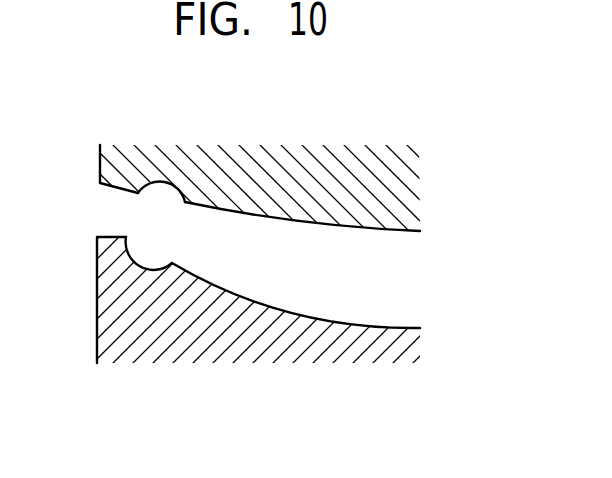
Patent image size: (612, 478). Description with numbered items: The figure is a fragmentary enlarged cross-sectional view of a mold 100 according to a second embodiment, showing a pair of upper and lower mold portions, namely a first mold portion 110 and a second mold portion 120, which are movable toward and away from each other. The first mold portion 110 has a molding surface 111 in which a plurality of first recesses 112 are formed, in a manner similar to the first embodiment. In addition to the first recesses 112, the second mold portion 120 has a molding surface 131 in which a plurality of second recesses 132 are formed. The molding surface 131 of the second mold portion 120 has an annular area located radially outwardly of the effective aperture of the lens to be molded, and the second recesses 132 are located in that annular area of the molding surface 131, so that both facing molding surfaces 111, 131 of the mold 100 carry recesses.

The mold 100 is at (318, 136).
The first mold portion 110 is at (387, 160).
The molding surface 111 is at (377, 233).
The first recesses 112 is at (152, 188).
The second mold portion 120 is at (160, 358).
The molding surface 131 is at (370, 322).
The second recesses 132 is at (146, 243).